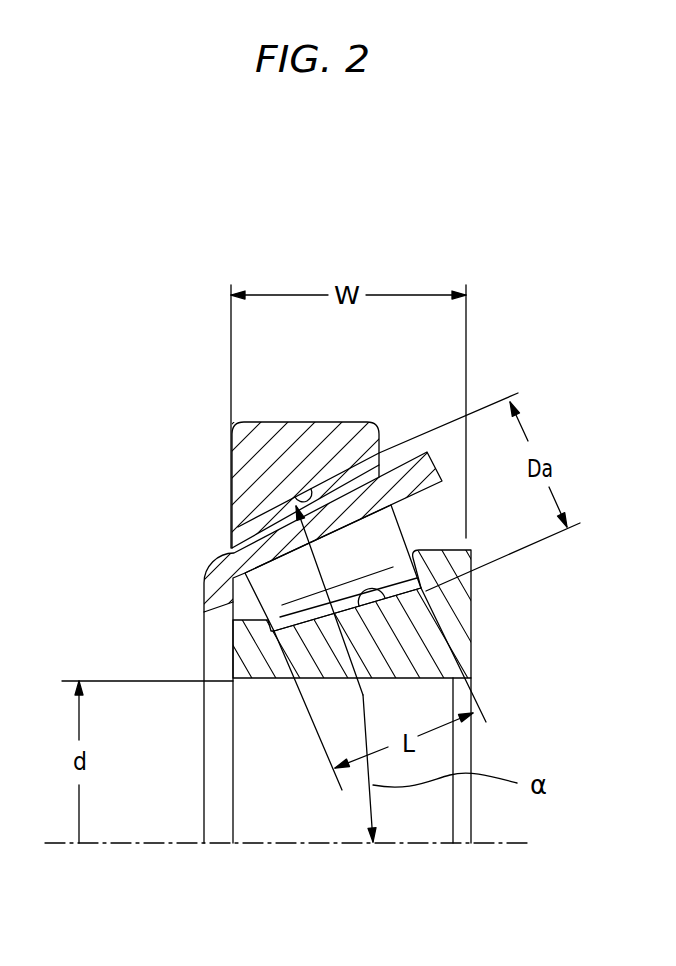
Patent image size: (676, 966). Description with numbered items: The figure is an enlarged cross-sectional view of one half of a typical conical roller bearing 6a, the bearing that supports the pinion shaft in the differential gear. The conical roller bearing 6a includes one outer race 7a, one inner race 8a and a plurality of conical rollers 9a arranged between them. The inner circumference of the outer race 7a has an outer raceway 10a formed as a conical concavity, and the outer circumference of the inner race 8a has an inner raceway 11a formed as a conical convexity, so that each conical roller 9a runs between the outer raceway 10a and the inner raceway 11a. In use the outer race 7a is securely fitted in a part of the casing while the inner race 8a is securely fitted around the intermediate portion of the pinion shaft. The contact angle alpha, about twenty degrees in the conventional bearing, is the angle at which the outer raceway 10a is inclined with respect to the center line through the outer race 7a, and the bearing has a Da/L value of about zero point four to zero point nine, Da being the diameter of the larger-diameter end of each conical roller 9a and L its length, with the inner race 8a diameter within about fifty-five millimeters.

The conical roller bearing 6a is at (290, 562).
The outer race 7a is at (347, 425).
The inner race 8a is at (252, 681).
The conical roller 9a is at (326, 480).
The outer raceway 10a is at (299, 490).
The inner raceway 11a is at (385, 602).